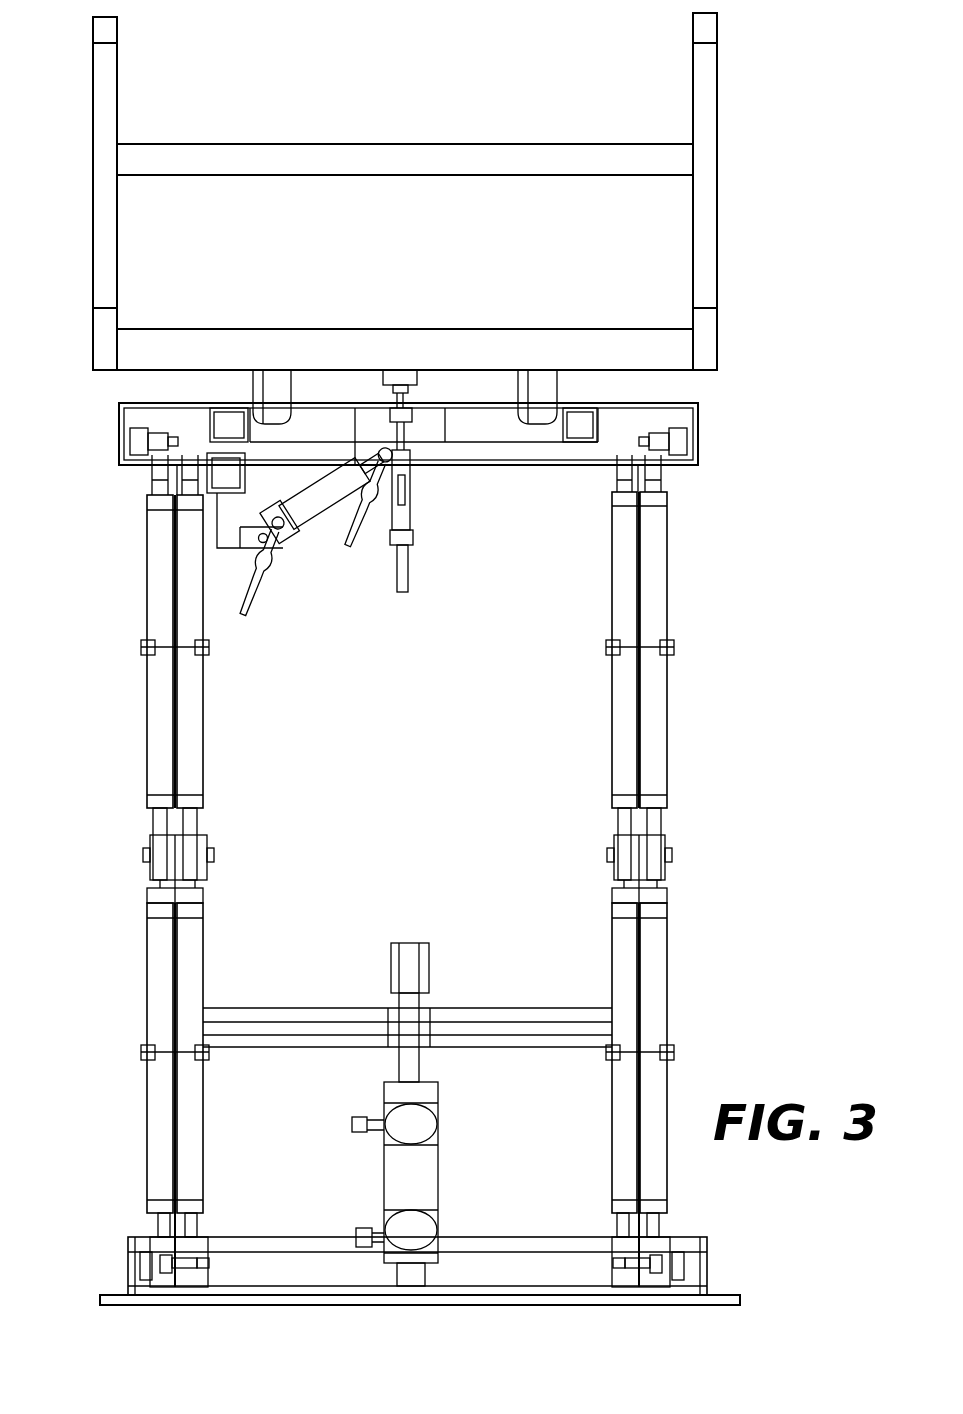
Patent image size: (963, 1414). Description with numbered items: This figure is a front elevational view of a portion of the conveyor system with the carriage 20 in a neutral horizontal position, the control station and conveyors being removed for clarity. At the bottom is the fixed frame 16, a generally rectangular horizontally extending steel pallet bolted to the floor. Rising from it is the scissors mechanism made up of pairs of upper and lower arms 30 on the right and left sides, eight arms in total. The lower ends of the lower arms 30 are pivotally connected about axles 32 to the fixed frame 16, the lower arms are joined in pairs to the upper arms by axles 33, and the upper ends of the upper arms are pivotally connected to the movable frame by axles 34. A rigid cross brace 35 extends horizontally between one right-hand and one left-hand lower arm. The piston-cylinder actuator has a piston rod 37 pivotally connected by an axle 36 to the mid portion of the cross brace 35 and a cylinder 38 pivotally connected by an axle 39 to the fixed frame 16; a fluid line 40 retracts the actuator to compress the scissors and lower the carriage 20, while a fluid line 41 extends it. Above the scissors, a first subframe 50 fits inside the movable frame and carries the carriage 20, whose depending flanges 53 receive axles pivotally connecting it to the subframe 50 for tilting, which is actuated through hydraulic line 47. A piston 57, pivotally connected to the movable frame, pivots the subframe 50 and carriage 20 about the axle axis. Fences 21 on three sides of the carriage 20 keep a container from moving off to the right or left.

The fixed frame 16 is at (710, 1253).
The carriage 20 is at (358, 346).
The fences 21 is at (108, 91).
The arms 30 is at (157, 579).
The axles 32 is at (183, 1273).
The axles 33 is at (214, 856).
The axles 34 is at (155, 450).
The cross brace 35 is at (509, 1010).
The axle 36 is at (388, 960).
The piston rod 37 is at (421, 1066).
The cylinder 38 is at (430, 1172).
The axle 39 is at (442, 1268).
The fluid line 40 is at (366, 1118).
The fluid line 41 is at (362, 1235).
The hydraulic line 47 is at (410, 576).
The first subframe 50 is at (478, 425).
The depending flanges 53 is at (268, 372).
The piston 57 is at (312, 510).